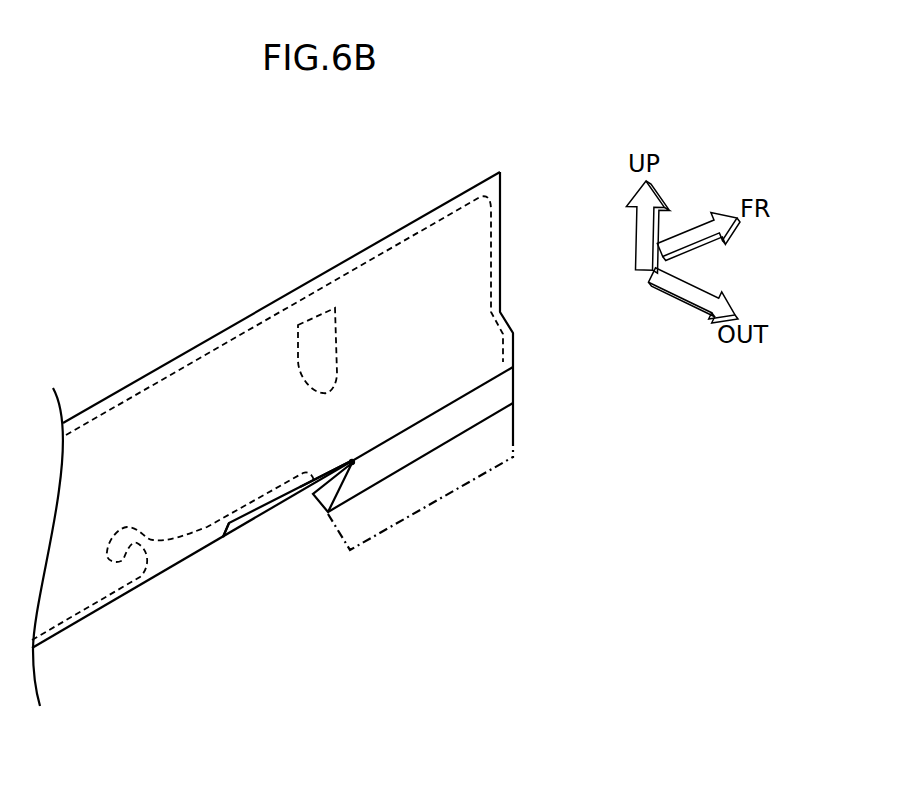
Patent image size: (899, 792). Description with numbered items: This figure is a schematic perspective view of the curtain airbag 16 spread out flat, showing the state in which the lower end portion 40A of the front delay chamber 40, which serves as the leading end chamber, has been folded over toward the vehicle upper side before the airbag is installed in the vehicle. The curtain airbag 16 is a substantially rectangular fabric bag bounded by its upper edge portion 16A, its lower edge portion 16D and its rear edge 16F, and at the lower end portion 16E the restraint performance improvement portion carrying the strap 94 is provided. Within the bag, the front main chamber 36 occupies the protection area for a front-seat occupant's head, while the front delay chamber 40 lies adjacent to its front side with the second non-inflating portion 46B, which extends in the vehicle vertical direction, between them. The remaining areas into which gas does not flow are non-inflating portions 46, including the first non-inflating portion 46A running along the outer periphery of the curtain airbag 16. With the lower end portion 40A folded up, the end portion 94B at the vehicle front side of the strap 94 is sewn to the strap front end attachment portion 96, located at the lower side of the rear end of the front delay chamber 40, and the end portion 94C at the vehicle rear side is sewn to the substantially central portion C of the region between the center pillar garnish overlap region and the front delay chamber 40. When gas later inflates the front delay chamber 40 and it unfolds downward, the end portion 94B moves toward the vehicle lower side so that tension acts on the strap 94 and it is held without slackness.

The curtain airbag 16 is at (212, 320).
The upper edge portion 16A is at (137, 380).
The lower edge portion 16D is at (97, 612).
The lower end portion 16E is at (163, 562).
The rear edge portion of panel 16F is at (502, 272).
The front main chamber 36 is at (188, 398).
The front delay chamber 40 is at (382, 324).
The lower end portion 40A is at (441, 408).
The non-inflating portions 46 is at (291, 385).
The first non-inflating portion 46A is at (470, 190).
The second non-inflating portion 46B is at (340, 347).
The strap 94 is at (287, 499).
The end portion at the vehicle front side of the strap 94B is at (368, 463).
The end portion at the vehicle rear side of the strap 94C is at (237, 532).
The strap front end attachment portion 96 is at (352, 462).
The substantially central portion C is at (208, 527).